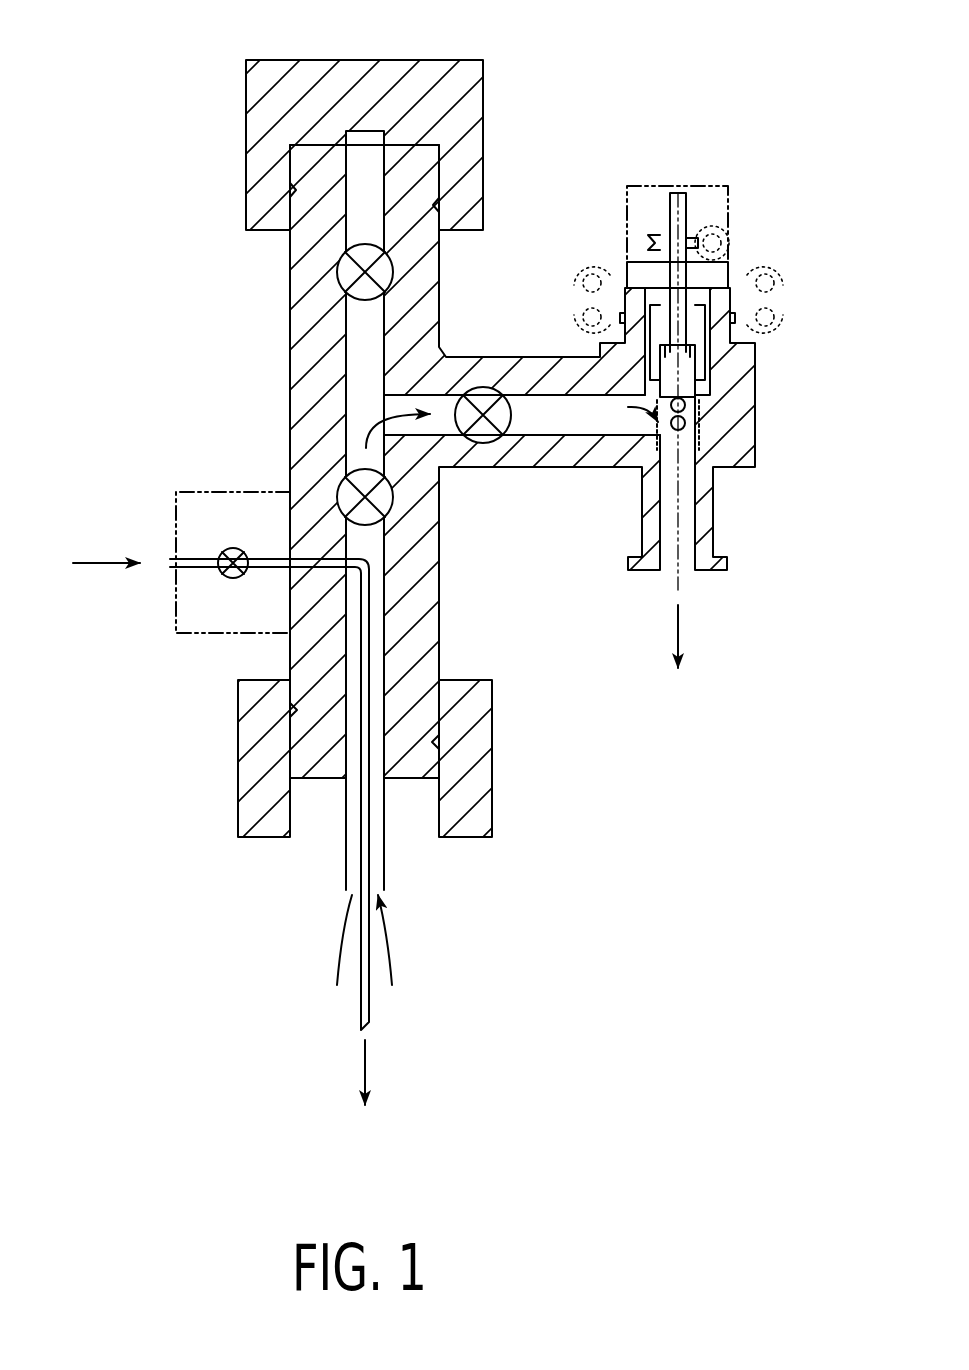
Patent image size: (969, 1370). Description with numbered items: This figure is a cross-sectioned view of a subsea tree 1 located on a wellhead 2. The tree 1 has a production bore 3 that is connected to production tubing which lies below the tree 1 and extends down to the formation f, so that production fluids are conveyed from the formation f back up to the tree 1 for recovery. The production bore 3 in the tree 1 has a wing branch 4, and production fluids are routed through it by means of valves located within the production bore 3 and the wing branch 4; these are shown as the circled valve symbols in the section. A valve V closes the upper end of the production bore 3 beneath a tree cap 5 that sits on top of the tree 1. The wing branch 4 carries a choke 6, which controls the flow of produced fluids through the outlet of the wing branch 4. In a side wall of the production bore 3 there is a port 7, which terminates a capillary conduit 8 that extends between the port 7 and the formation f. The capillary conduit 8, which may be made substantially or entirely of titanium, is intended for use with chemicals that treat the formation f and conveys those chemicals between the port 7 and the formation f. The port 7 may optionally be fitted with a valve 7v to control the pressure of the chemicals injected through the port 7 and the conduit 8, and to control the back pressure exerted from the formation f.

The tree 1 is at (288, 329).
The wellhead 2 is at (414, 818).
The production bore 3 is at (370, 543).
The wing branch 4 is at (552, 418).
The tree cap 5 is at (407, 60).
The choke 6 is at (776, 223).
The port 7 is at (250, 492).
The valve 7v is at (231, 579).
The capillary conduit 8 is at (368, 605).
The valve V is at (343, 266).
The formation f is at (365, 1095).